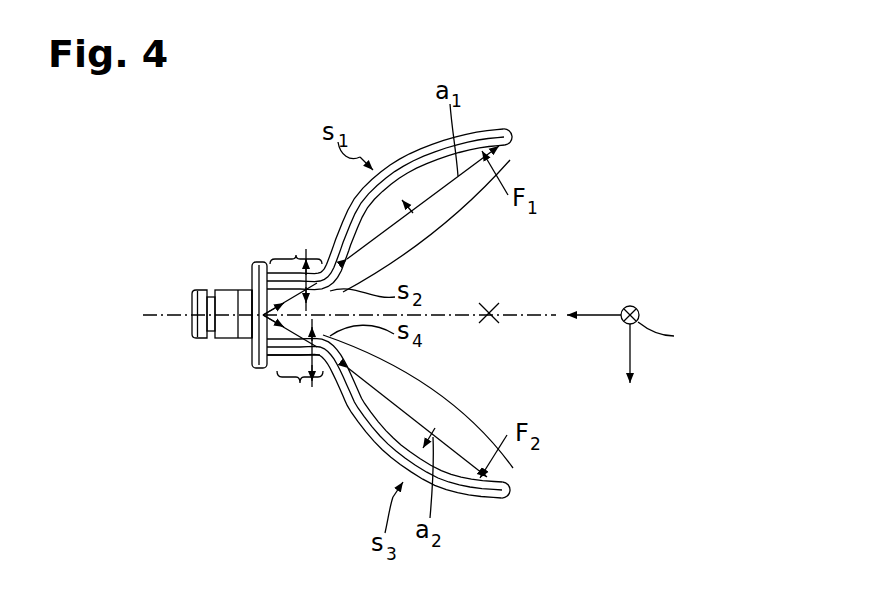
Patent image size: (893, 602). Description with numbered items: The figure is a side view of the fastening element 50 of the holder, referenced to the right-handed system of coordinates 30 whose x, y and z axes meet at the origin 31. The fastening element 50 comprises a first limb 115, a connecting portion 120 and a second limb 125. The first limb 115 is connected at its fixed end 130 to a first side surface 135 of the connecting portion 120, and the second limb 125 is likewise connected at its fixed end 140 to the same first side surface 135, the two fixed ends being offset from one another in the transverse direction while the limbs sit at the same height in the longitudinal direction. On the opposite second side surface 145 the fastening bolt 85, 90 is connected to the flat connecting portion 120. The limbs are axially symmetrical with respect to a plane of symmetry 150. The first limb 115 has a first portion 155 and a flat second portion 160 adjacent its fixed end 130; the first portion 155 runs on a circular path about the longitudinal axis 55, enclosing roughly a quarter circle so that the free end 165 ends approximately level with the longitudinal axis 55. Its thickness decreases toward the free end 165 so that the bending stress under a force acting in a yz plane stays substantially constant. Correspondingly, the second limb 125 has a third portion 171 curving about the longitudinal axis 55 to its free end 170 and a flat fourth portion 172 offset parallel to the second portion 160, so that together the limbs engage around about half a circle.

The system of coordinates 30 is at (705, 307).
The origin 31 is at (636, 308).
The fastening element 50 is at (590, 228).
The longitudinal axis 55 is at (493, 324).
The fastening bolt 85 is at (139, 296).
The fastening bolt 90 is at (190, 305).
The first limb 115 is at (403, 167).
The connecting portion 120 is at (234, 326).
The second limb 125 is at (372, 440).
The fixed end of the first limb 130 is at (250, 284).
The first side surface 135 is at (250, 287).
The fixed end of the second limb 140 is at (284, 357).
The second side surface 145 is at (245, 340).
The plane of symmetry 150 is at (418, 316).
The first portion 155 is at (433, 233).
The second portion 160 is at (296, 255).
The free end of the first limb 165 is at (508, 137).
The free end of the second limb 170 is at (508, 489).
The third portion 171 is at (433, 390).
The fourth portion 172 is at (300, 383).